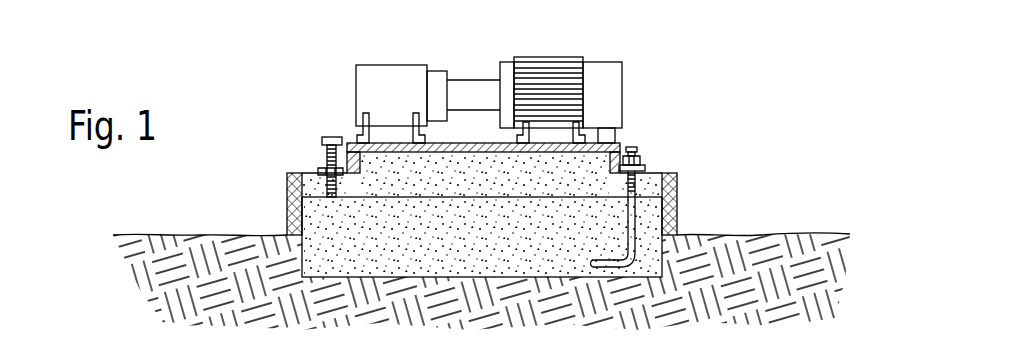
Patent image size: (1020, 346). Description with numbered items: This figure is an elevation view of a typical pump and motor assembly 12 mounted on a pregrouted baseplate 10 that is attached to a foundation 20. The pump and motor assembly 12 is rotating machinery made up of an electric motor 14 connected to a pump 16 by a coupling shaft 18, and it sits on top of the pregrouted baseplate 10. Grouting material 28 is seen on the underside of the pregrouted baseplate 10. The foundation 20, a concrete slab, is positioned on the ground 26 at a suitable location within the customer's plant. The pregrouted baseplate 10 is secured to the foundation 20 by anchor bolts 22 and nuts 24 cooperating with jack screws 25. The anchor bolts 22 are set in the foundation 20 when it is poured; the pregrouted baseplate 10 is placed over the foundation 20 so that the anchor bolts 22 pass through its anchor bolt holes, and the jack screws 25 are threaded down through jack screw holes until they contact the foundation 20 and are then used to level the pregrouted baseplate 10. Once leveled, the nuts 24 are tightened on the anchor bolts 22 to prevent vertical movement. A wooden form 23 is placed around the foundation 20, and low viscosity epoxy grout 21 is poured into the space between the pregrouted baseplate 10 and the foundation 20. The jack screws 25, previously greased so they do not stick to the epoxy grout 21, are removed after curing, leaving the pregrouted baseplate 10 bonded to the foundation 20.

The pregrouted baseplate 10 is at (613, 142).
The pump and motor assembly 12 is at (478, 50).
The electric motor 14 is at (597, 62).
The pump 16 is at (356, 72).
The coupling shaft 18 is at (470, 80).
The foundation 20 is at (648, 222).
The epoxy grout 21 is at (312, 176).
The anchor bolt 22 is at (632, 146).
The wooden form 23 is at (287, 207).
The nut 24 is at (646, 165).
The jack screw 25 is at (323, 136).
The ground 26 is at (151, 233).
The grouting material 28 is at (592, 150).